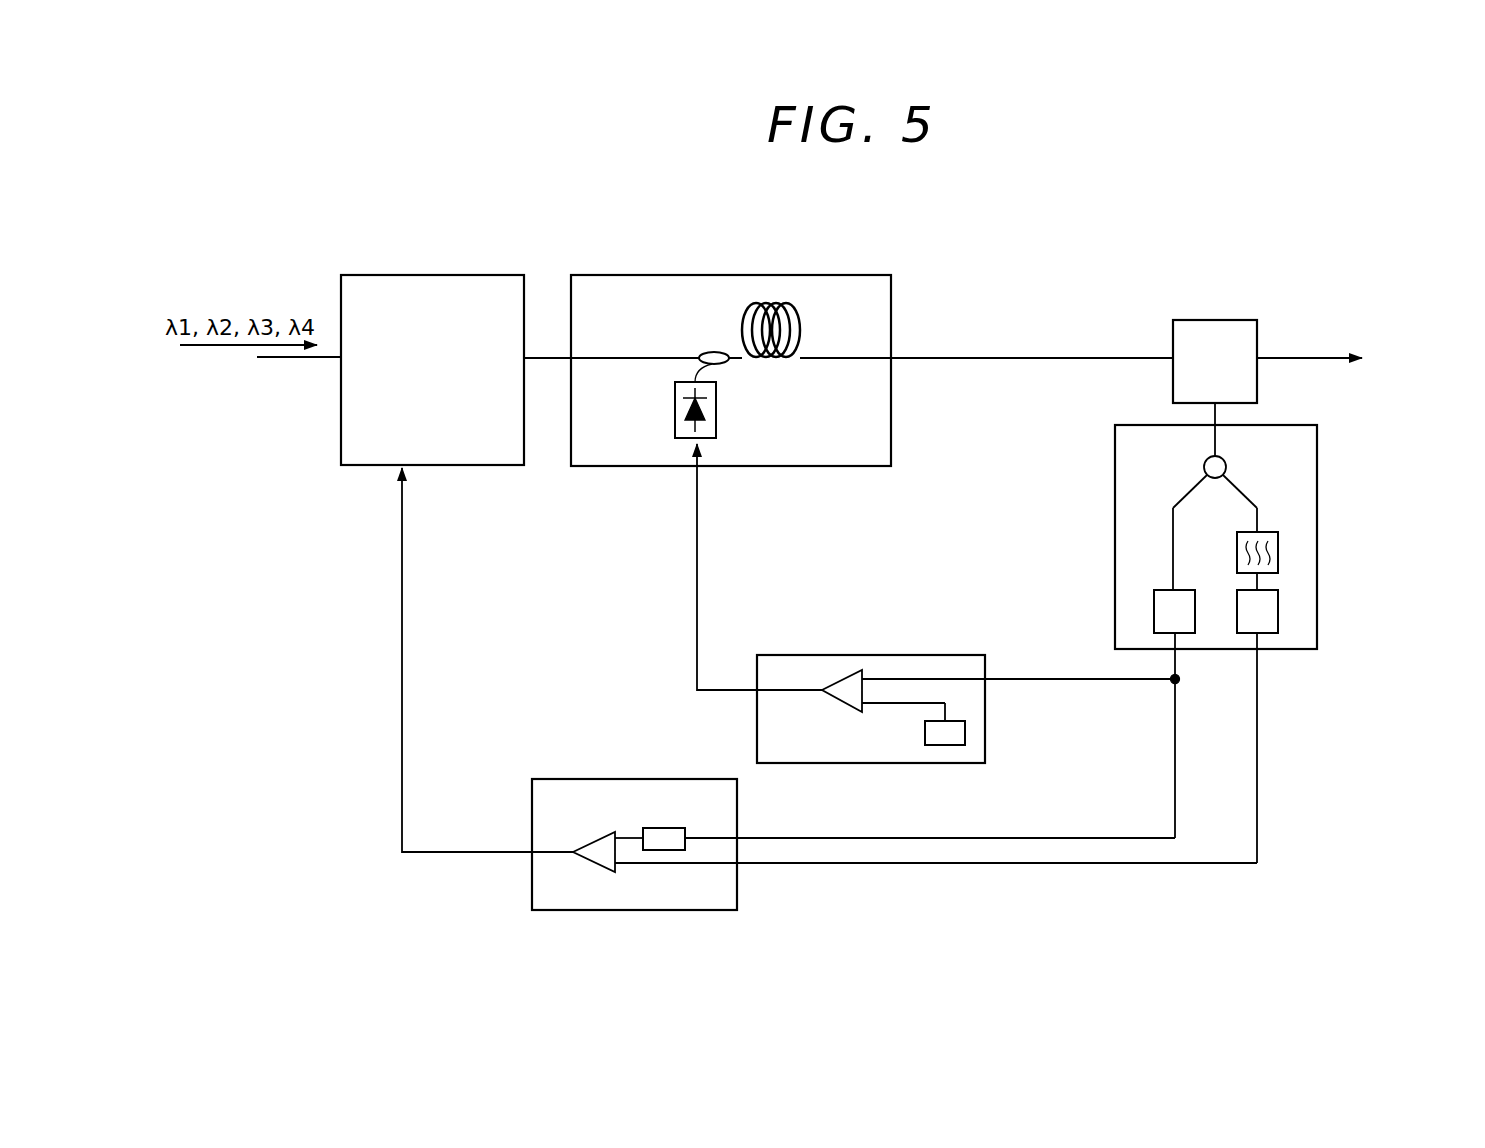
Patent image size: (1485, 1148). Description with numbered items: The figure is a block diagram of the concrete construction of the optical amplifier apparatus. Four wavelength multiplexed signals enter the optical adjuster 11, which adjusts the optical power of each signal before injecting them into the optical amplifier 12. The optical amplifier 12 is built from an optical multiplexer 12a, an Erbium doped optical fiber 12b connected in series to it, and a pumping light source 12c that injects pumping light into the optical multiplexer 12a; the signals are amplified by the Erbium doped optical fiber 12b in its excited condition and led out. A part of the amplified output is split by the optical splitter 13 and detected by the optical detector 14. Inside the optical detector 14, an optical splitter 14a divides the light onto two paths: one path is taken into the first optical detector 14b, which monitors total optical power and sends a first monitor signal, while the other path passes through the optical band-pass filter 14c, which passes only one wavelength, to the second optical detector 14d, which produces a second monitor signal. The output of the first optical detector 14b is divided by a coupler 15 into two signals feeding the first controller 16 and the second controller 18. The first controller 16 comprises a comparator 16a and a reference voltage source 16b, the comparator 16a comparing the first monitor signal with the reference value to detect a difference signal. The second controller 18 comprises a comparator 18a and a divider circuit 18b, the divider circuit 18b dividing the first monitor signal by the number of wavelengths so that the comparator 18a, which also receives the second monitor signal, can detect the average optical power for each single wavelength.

The optical adjuster 11 is at (357, 275).
The optical amplifier 12 is at (652, 275).
The optical multiplexer 12a is at (700, 356).
The Erbium doped optical fiber 12b is at (786, 298).
The pumping light source 12c is at (716, 408).
The optical splitter 13 is at (1173, 336).
The optical detector 14 is at (1115, 443).
The optical splitter 14a is at (1226, 463).
The first optical detector 14b is at (1154, 596).
The optical band-pass filter 14c is at (1268, 530).
The second optical detector 14d is at (1278, 592).
The coupler 15 is at (1180, 684).
The first controller 16 is at (757, 661).
The comparator 16a is at (827, 698).
The reference voltage source 16b is at (937, 746).
The second controller 18 is at (535, 790).
The comparator 18a is at (585, 858).
The divider circuit 18b is at (643, 830).